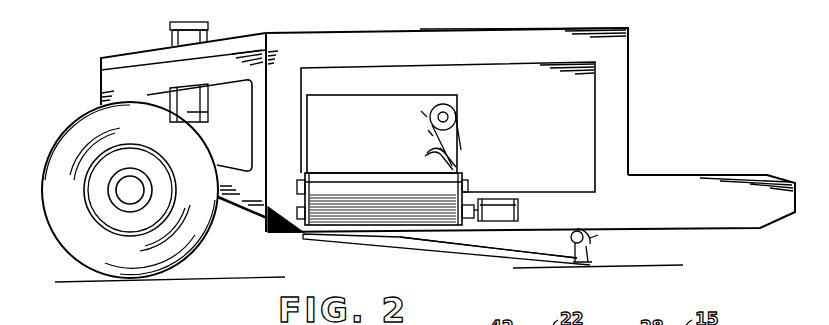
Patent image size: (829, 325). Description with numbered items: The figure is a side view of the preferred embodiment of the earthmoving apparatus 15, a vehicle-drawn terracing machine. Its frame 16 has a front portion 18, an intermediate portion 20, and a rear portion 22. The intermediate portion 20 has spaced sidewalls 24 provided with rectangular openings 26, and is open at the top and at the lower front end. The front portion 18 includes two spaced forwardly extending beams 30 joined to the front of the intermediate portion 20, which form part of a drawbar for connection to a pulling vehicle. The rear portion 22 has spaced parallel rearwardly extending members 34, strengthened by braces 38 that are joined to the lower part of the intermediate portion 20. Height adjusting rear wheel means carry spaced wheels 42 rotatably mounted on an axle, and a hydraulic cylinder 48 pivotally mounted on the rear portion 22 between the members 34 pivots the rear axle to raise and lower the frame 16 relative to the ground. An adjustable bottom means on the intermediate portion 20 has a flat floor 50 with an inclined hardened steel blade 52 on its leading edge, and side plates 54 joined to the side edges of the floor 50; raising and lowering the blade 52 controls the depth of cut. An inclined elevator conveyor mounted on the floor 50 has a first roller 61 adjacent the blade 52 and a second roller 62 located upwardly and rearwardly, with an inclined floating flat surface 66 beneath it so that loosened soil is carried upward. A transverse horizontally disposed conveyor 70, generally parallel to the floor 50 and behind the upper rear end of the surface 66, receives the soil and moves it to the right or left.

The earthmoving apparatus 15 is at (639, 36).
The frame 16 is at (562, 27).
The front portion 18 is at (655, 175).
The intermediate portion 20 is at (438, 33).
The rear portion 22 is at (149, 52).
The sidewalls 24 is at (544, 114).
The rectangular openings 26 is at (333, 98).
The forwardly extending beams 30 is at (690, 207).
The rearwardly extending members 34 is at (193, 83).
The braces 38 is at (265, 201).
The wheels 42 is at (78, 120).
The hydraulic cylinder 48 is at (186, 20).
The flat floor 50 is at (471, 248).
The inclined hardened steel blade 52 is at (598, 262).
The side plates 54 is at (518, 237).
The first roller 61 is at (594, 243).
The second roller 62 is at (407, 199).
The inclined floating flat surface 66 is at (460, 155).
The transverse conveyor 70 is at (418, 172).